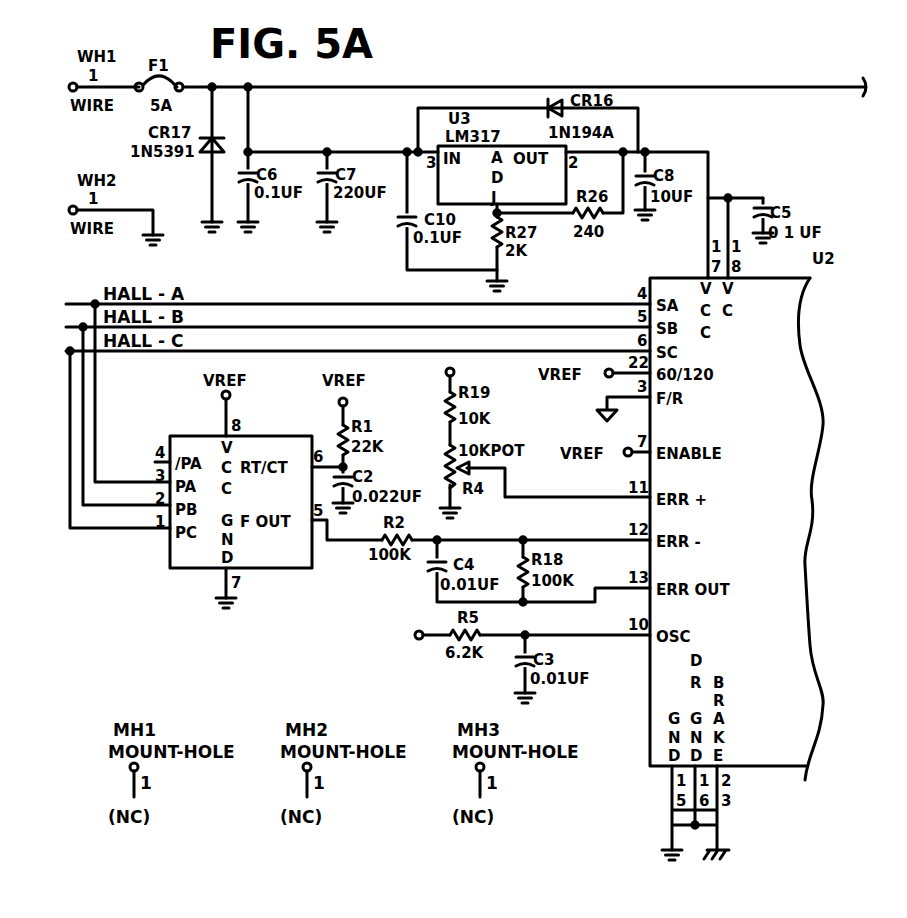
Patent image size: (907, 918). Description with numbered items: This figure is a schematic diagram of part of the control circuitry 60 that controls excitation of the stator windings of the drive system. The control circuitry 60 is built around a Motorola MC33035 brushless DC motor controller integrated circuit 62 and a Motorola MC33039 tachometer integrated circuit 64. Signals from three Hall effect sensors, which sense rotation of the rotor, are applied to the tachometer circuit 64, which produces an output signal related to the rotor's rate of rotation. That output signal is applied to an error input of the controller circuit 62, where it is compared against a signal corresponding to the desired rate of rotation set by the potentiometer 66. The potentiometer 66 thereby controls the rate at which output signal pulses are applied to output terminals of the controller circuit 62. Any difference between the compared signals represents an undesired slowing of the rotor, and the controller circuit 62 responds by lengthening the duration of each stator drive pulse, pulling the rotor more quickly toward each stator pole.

The control circuitry 60 is at (462, 72).
The brushless DC motor controller integrated circuit 62 is at (658, 766).
The tachometer integrated circuit 64 is at (268, 568).
The potentiometer 66 is at (446, 461).